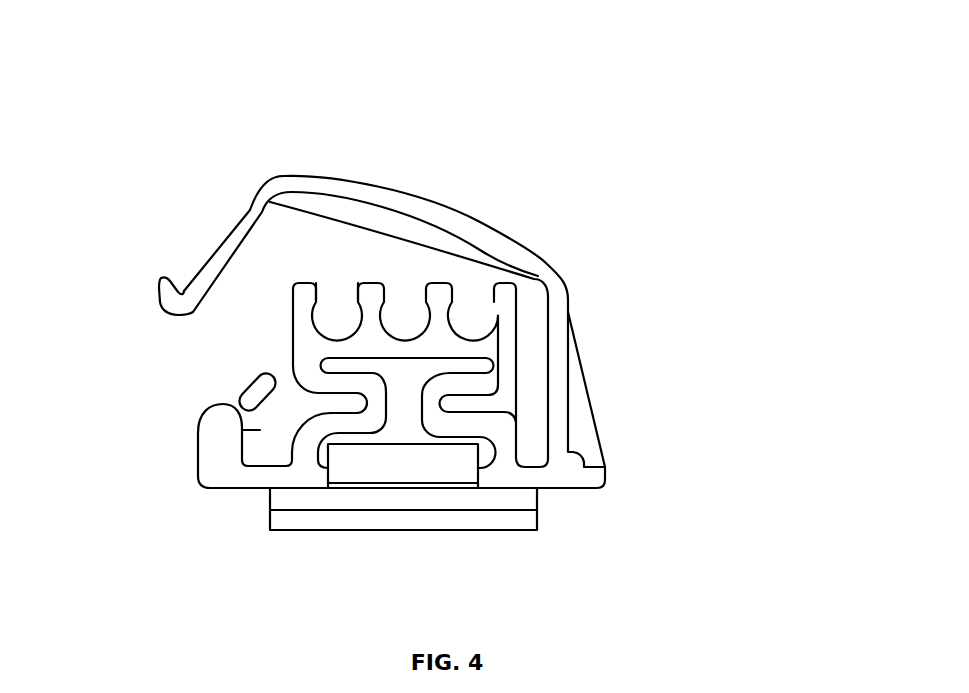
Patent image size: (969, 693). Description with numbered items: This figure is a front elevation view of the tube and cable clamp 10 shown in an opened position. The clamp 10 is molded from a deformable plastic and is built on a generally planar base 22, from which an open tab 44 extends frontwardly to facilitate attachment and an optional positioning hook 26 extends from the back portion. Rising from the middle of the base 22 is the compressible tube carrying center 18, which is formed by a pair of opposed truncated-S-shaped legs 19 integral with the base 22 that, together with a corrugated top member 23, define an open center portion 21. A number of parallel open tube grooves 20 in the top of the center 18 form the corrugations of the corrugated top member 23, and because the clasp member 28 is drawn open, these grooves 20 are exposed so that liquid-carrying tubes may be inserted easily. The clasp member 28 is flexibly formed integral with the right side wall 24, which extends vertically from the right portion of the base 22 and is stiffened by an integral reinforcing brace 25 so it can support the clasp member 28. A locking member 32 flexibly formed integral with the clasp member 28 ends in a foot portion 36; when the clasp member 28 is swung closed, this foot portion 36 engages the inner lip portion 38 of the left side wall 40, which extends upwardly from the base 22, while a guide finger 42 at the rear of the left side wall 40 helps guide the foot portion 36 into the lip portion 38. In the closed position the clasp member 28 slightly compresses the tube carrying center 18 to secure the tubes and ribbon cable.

The tube and cable clamp 10 is at (513, 126).
The tube carrying center member 18 is at (414, 441).
The truncated-S-shaped legs 19 is at (369, 390).
The tube grooves 20 is at (467, 297).
The open center portion 21 is at (398, 400).
The base 22 is at (582, 490).
The corrugated top member 23 is at (377, 332).
The right side wall 24 is at (570, 367).
The reinforcing brace 25 is at (598, 425).
The positioning hook 26 is at (521, 522).
The clasp member 28 is at (399, 181).
The locking member 32 is at (247, 212).
The foot portion 36 is at (162, 277).
The inner lip portion 38 is at (229, 423).
The left side wall 40 is at (213, 465).
The guide finger 42 is at (243, 395).
The open tab 44 is at (387, 476).